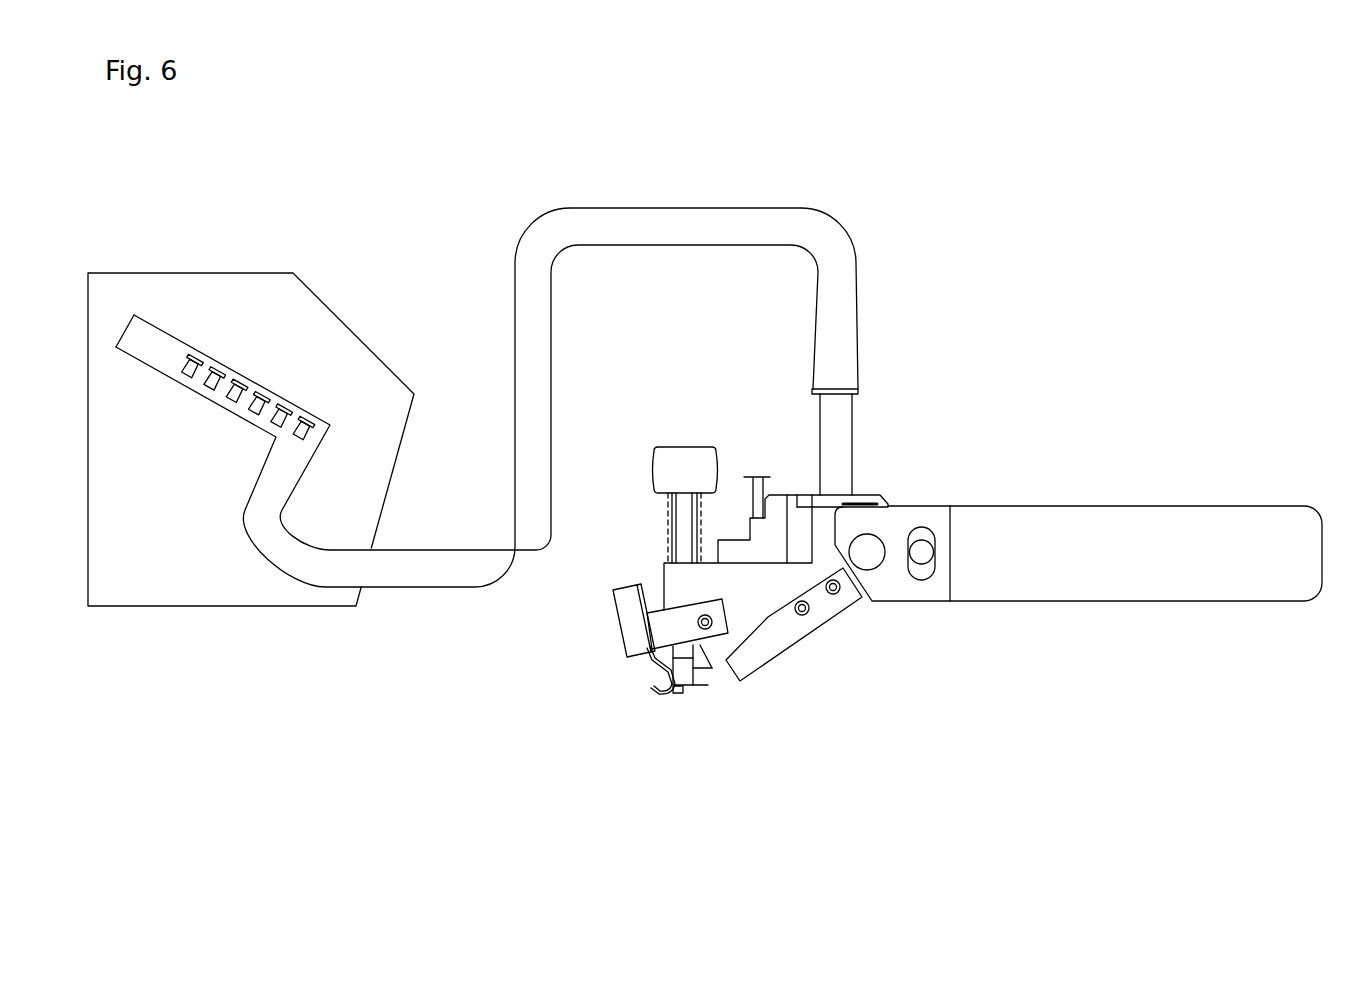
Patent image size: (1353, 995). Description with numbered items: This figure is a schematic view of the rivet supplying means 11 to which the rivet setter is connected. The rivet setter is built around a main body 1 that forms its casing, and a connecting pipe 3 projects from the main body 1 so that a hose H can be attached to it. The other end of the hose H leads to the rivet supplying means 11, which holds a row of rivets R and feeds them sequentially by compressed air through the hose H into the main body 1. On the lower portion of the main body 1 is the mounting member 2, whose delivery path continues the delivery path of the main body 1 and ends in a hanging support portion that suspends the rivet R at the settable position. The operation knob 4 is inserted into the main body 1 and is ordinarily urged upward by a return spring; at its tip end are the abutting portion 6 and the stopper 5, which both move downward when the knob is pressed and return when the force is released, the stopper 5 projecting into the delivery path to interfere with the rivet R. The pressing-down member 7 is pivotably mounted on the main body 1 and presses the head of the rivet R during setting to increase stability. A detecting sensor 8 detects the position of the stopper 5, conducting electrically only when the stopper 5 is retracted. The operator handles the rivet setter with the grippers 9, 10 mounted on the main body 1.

The main body 1 is at (778, 500).
The mounting member 2 is at (797, 632).
The connecting pipe 3 is at (848, 437).
The operation knob 4 is at (682, 457).
The stopper 5 is at (703, 667).
The abutting portion 6 is at (677, 683).
The pressing-down member 7 is at (627, 632).
The detecting sensor 8 is at (727, 550).
The gripper 9 is at (1137, 522).
The gripper 10 is at (873, 562).
The rivet supplying means 11 is at (222, 272).
The hose H is at (625, 222).
The rivet R is at (268, 393).